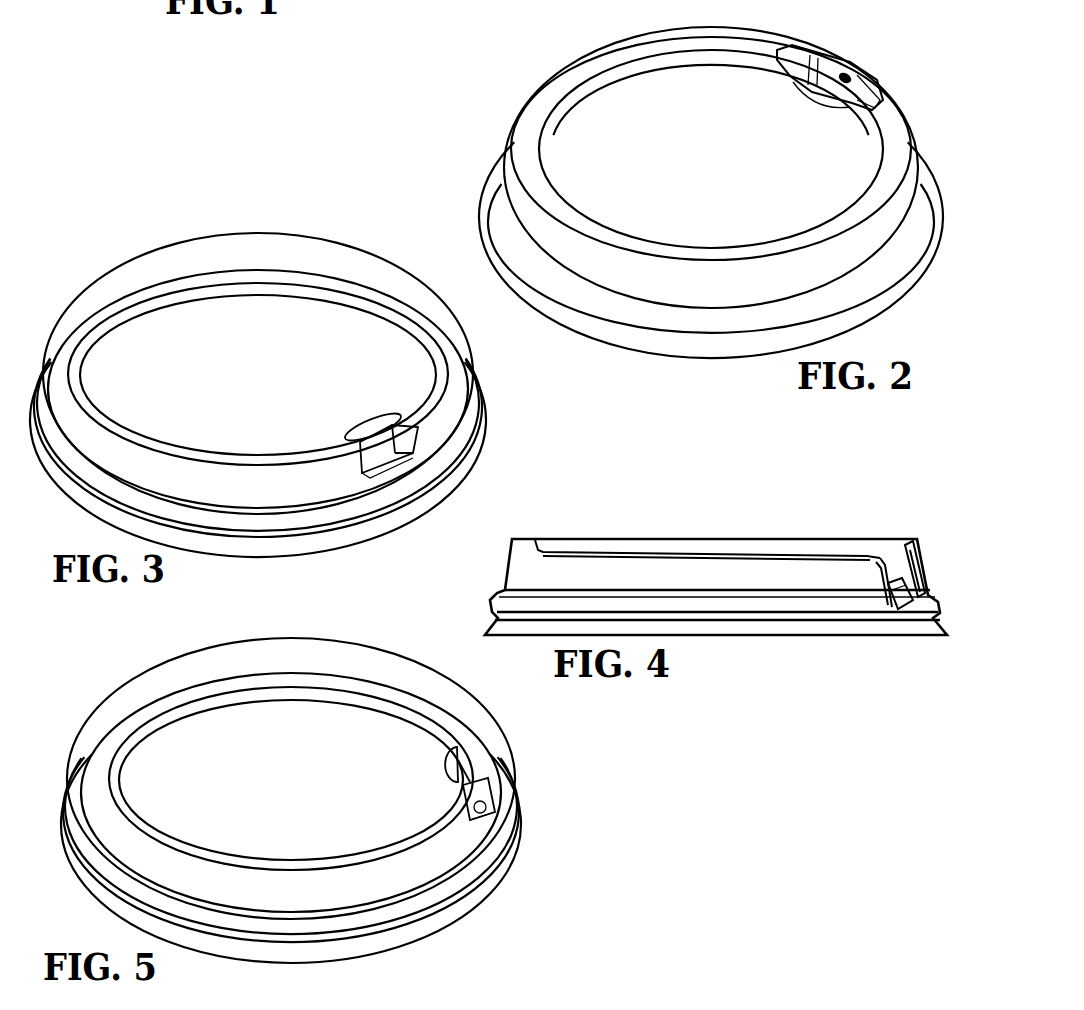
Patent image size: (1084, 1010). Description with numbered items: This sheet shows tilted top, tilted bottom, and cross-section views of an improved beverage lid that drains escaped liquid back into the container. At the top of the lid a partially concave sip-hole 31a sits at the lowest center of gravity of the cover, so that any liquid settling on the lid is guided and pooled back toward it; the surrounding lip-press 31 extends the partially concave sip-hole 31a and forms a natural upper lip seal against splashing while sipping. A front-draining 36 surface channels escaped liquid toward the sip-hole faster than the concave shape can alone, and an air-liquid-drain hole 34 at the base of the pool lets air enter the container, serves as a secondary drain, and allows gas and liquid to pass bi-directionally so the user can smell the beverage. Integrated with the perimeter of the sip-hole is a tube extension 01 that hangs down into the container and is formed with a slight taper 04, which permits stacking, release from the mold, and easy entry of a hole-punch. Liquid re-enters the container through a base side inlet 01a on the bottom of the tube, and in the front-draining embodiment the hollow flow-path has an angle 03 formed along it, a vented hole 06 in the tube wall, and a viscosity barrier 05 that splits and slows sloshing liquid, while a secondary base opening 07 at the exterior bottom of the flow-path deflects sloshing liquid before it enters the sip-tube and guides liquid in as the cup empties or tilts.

In FIG. 2, the vented hole 06 is at (850, 77).
In FIG. 2, the lip-press 31 is at (883, 82).
In FIG. 3, the tube extension 01 is at (405, 436).
In FIG. 3, the taper 04 is at (405, 447).
In FIG. 3, the base side inlet 01a is at (373, 471).
In FIG. 4, the base side inlet 01a is at (895, 563).
In FIG. 4, the air-liquid-drain hole 34 is at (615, 548).
In FIG. 4, the front-draining 36 is at (790, 552).
In FIG. 4, the partially concave sip-hole 31a is at (868, 562).
In FIG. 4, the angle 03 is at (885, 593).
In FIG. 4, the viscosity barrier 05 is at (900, 607).
In FIG. 5, the viscosity barrier 05 is at (523, 823).
In FIG. 5, the secondary base opening 07 is at (490, 848).